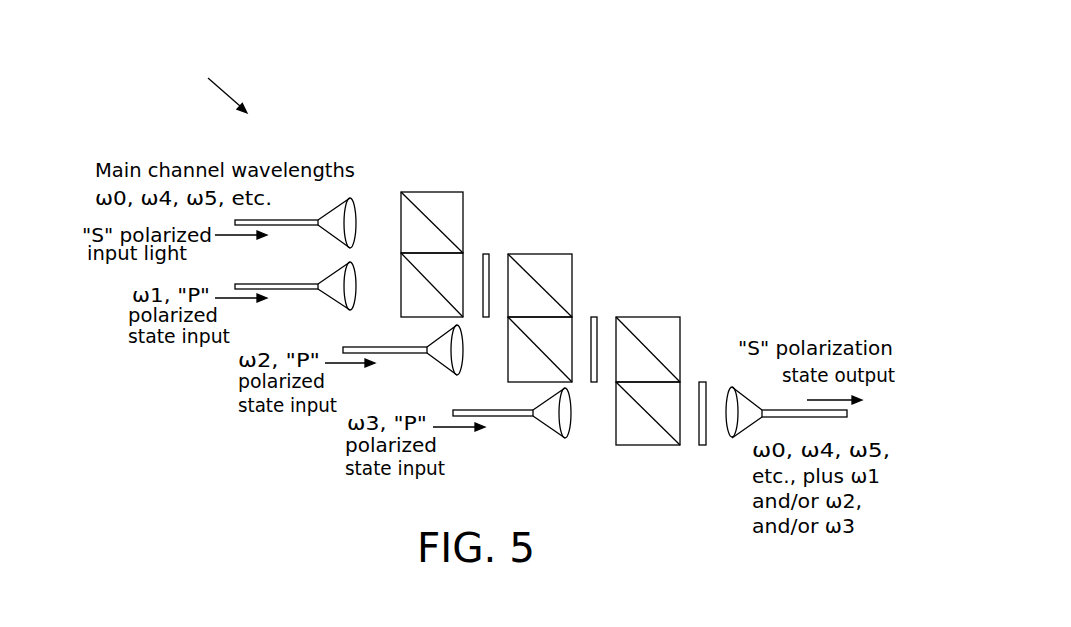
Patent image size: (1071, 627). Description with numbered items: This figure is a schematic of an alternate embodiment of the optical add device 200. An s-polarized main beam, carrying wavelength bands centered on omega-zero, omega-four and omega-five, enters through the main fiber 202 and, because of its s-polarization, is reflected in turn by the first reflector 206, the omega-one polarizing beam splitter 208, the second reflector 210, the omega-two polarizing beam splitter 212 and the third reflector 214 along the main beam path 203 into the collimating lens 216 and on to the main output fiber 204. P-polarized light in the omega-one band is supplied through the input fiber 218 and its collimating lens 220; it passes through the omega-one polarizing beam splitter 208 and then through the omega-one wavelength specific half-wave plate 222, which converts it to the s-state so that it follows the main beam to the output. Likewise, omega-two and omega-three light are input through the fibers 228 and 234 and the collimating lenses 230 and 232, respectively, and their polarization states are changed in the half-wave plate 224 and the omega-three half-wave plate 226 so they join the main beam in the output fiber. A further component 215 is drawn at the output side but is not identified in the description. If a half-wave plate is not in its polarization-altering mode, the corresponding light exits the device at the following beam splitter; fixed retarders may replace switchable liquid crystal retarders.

The optical add device 200 is at (211, 84).
The main fiber 202 is at (277, 227).
The main beam path 203 is at (353, 213).
The main output fiber 204 is at (775, 408).
The first reflector 206 is at (420, 192).
The omega-one polarizing beam splitter 208 is at (413, 318).
The second reflector 210 is at (528, 254).
The omega-two polarizing beam splitter 212 is at (523, 383).
The third reflector 214 is at (637, 317).
The output focusing lens 215 is at (730, 432).
The collimating lens 216 is at (632, 446).
The input fiber 218 is at (277, 291).
The collimating lens 220 is at (353, 277).
The omega-one wavelength specific half-wave plate 222 is at (488, 251).
The half-wave plate 224 is at (593, 314).
The omega-three half-wave plate 226 is at (703, 379).
The input fiber 228 is at (383, 355).
The collimating lens 230 is at (462, 334).
The collimating lens 232 is at (570, 420).
The input fiber 234 is at (493, 418).